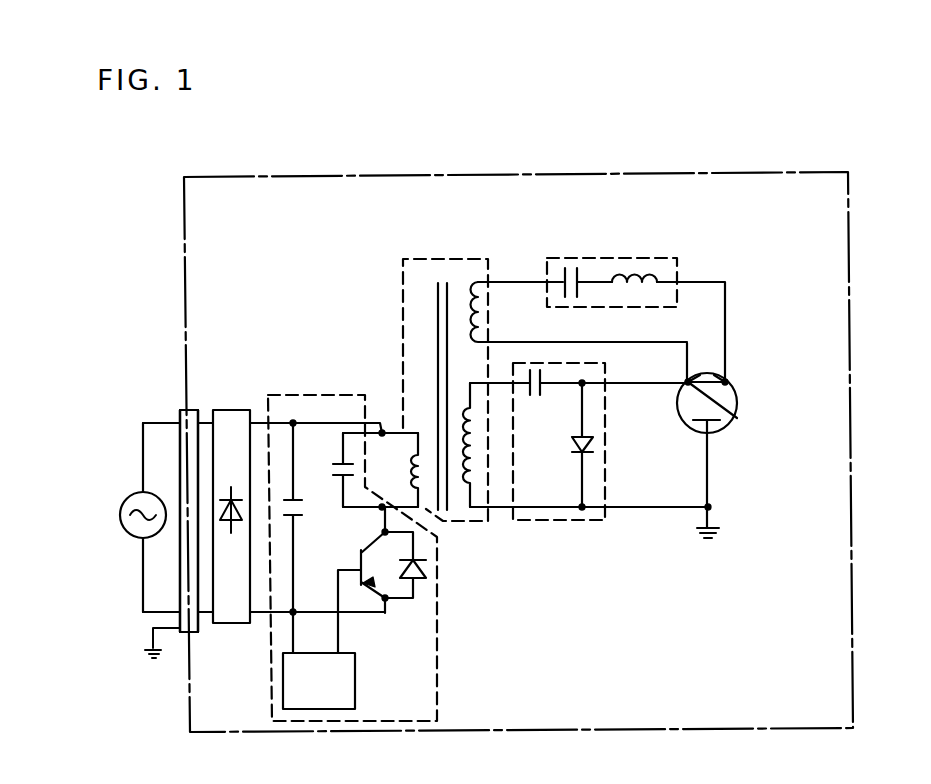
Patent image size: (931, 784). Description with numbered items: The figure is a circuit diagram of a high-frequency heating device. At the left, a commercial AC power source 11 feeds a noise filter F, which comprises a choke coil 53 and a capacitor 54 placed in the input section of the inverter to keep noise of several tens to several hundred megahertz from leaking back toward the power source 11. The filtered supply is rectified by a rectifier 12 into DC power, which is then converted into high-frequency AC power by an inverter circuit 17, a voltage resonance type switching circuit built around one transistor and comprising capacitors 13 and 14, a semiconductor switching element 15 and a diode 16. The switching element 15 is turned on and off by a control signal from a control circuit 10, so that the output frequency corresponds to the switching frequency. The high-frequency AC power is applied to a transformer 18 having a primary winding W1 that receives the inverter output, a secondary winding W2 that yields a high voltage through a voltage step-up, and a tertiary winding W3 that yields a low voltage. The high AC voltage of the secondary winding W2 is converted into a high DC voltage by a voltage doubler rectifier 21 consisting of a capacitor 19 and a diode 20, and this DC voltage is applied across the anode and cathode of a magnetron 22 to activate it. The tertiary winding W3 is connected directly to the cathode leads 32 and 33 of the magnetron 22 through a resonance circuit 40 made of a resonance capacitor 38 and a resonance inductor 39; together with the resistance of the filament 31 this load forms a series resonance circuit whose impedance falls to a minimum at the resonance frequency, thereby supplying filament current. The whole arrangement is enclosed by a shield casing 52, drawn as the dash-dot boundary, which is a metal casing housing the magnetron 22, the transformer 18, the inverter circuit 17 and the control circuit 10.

The control circuit 10 is at (340, 689).
The commercial AC power source 11 is at (128, 495).
The rectifier 12 is at (230, 409).
The capacitor 13 is at (303, 515).
The capacitor 14 is at (342, 463).
The semiconductor switching element 15 is at (367, 583).
The diode 16 is at (433, 571).
The inverter circuit 17 is at (310, 393).
The transformer 18 is at (410, 258).
The capacitor 19 is at (536, 397).
The diode 20 is at (573, 448).
The voltage doubler rectifier 21 is at (563, 523).
The magnetron 22 is at (737, 388).
The filament 31 is at (737, 418).
The cathode lead 32 is at (725, 382).
The cathode lead 33 is at (688, 382).
The resonance capacitor 38 is at (563, 270).
The resonance inductor 39 is at (655, 272).
The resonance circuit 40 is at (633, 255).
The shield casing 52 is at (184, 262).
The choke coil 53 is at (120, 523).
The capacitor 54 is at (189, 521).
The noise filter F is at (178, 573).
The primary winding W1 is at (410, 457).
The secondary winding W2 is at (473, 478).
The tertiary winding W3 is at (483, 283).